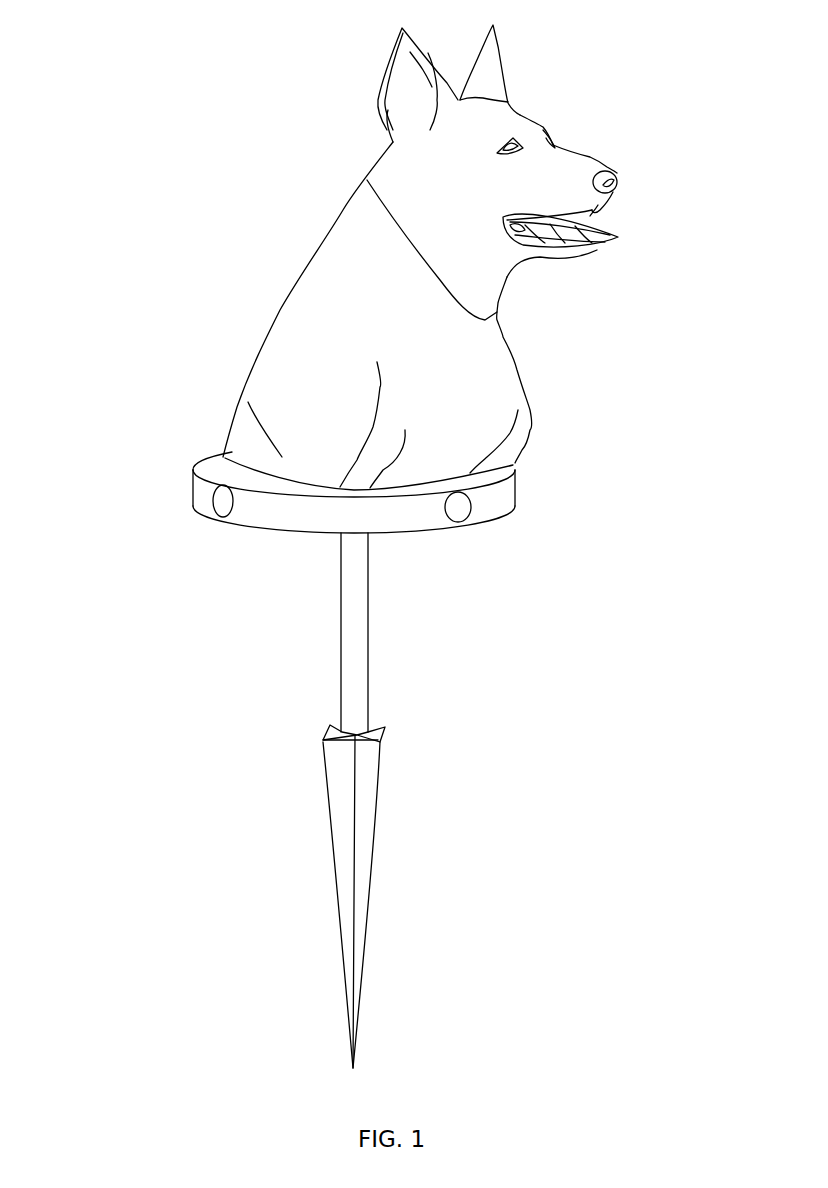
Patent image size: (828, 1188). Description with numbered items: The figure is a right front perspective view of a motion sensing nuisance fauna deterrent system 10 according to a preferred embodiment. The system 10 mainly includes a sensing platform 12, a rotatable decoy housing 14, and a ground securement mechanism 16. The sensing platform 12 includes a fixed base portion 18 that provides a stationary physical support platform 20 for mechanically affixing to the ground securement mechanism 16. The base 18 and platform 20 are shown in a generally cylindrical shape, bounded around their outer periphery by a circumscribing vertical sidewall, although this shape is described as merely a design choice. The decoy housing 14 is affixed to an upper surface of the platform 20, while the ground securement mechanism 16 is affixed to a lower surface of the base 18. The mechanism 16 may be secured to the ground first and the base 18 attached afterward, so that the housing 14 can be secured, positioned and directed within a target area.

The motion sensing nuisance fauna deterrent system 10 is at (180, 213).
The sensing platform 12 is at (530, 482).
The rotatable decoy housing 14 is at (548, 335).
The ground securement mechanism 16 is at (438, 690).
The fixed base portion 18 is at (262, 513).
The stationary physical support platform 20 is at (228, 462).